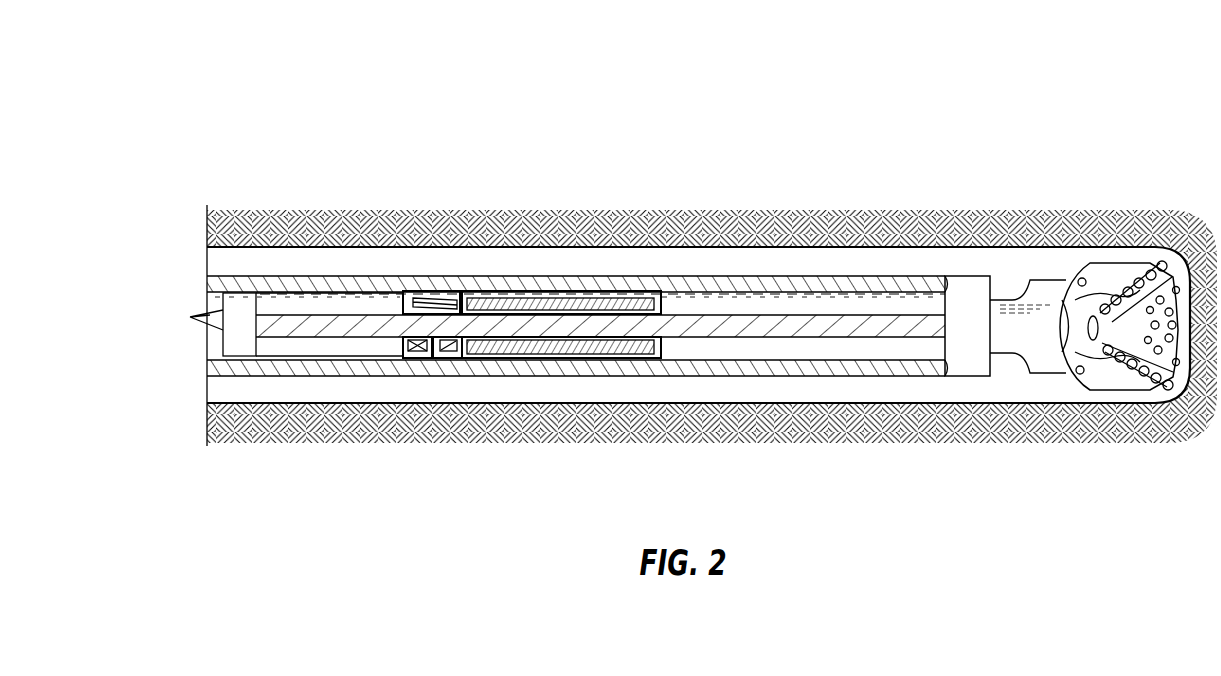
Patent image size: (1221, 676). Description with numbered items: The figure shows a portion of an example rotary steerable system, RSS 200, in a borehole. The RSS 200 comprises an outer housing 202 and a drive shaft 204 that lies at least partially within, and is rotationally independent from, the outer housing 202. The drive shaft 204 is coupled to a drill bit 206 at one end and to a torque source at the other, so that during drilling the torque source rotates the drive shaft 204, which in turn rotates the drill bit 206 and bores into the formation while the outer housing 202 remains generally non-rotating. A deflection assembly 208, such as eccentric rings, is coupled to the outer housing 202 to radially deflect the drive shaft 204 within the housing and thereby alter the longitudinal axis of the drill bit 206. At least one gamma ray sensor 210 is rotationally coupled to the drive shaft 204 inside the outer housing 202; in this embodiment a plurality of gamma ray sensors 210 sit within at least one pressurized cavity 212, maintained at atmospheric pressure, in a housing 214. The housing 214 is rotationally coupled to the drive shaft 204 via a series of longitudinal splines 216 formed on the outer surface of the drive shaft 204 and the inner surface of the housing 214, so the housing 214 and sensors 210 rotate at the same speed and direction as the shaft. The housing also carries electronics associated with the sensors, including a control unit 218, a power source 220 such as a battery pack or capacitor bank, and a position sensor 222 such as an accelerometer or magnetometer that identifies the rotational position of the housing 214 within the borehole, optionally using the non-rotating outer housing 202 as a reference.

The RSS 200 is at (188, 74).
The outer housing 202 is at (425, 333).
The drive shaft 204 is at (793, 327).
The drill bit 206 is at (1115, 263).
The deflection assembly 208 is at (236, 298).
The gamma ray sensor 210 is at (595, 343).
The pressurized cavity 212 is at (530, 295).
The housing 214 is at (437, 353).
The longitudinal splines 216 is at (407, 299).
The control unit 218 is at (430, 300).
The power source 220 is at (417, 353).
The position sensor 222 is at (448, 353).